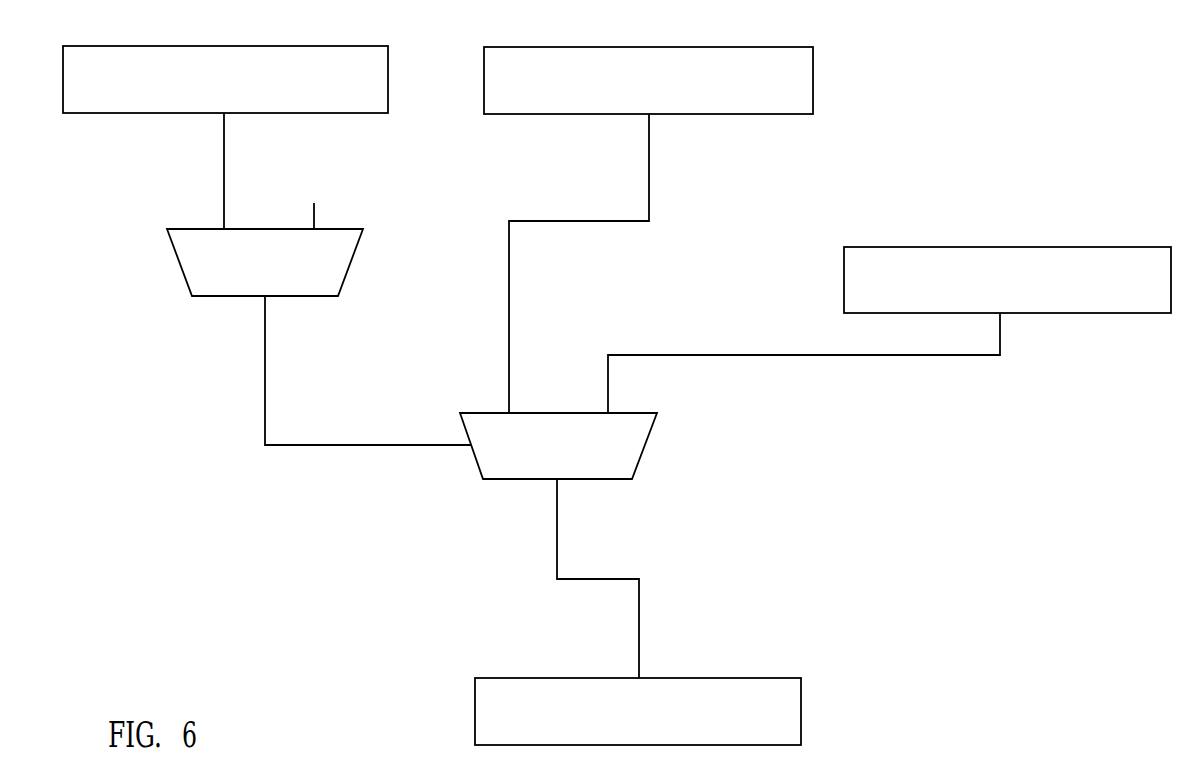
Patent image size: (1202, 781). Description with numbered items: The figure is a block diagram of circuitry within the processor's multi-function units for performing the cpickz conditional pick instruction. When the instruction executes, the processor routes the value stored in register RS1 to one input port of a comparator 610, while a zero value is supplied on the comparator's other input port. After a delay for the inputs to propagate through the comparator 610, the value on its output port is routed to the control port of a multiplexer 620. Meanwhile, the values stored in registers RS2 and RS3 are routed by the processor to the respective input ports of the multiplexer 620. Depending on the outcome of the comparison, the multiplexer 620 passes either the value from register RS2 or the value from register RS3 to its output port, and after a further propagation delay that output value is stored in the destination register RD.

The comparator 610 is at (325, 297).
The multiplexer 620 is at (617, 479).
The register RS1 is at (225, 65).
The register RS2 is at (648, 66).
The register RS3 is at (1007, 265).
The register RD is at (638, 728).